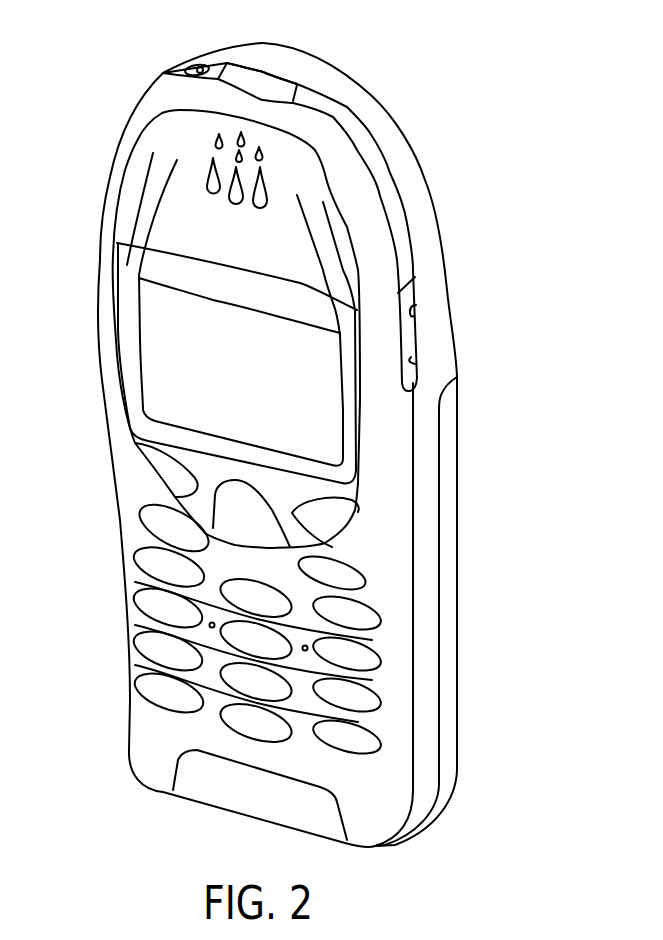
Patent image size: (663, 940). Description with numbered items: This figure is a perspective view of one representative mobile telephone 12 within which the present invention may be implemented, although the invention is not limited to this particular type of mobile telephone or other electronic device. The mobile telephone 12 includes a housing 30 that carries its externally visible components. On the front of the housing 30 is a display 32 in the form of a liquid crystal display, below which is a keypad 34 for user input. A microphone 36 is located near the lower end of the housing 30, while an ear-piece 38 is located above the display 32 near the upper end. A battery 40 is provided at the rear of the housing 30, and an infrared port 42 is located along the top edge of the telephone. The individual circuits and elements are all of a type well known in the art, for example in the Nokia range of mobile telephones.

The mobile telephone 12 is at (296, 451).
The housing 30 is at (422, 207).
The display 32 is at (322, 415).
The keypad 34 is at (345, 745).
The microphone 36 is at (198, 783).
The ear-piece 38 is at (225, 165).
The battery 40 is at (450, 727).
The infrared port 42 is at (262, 78).